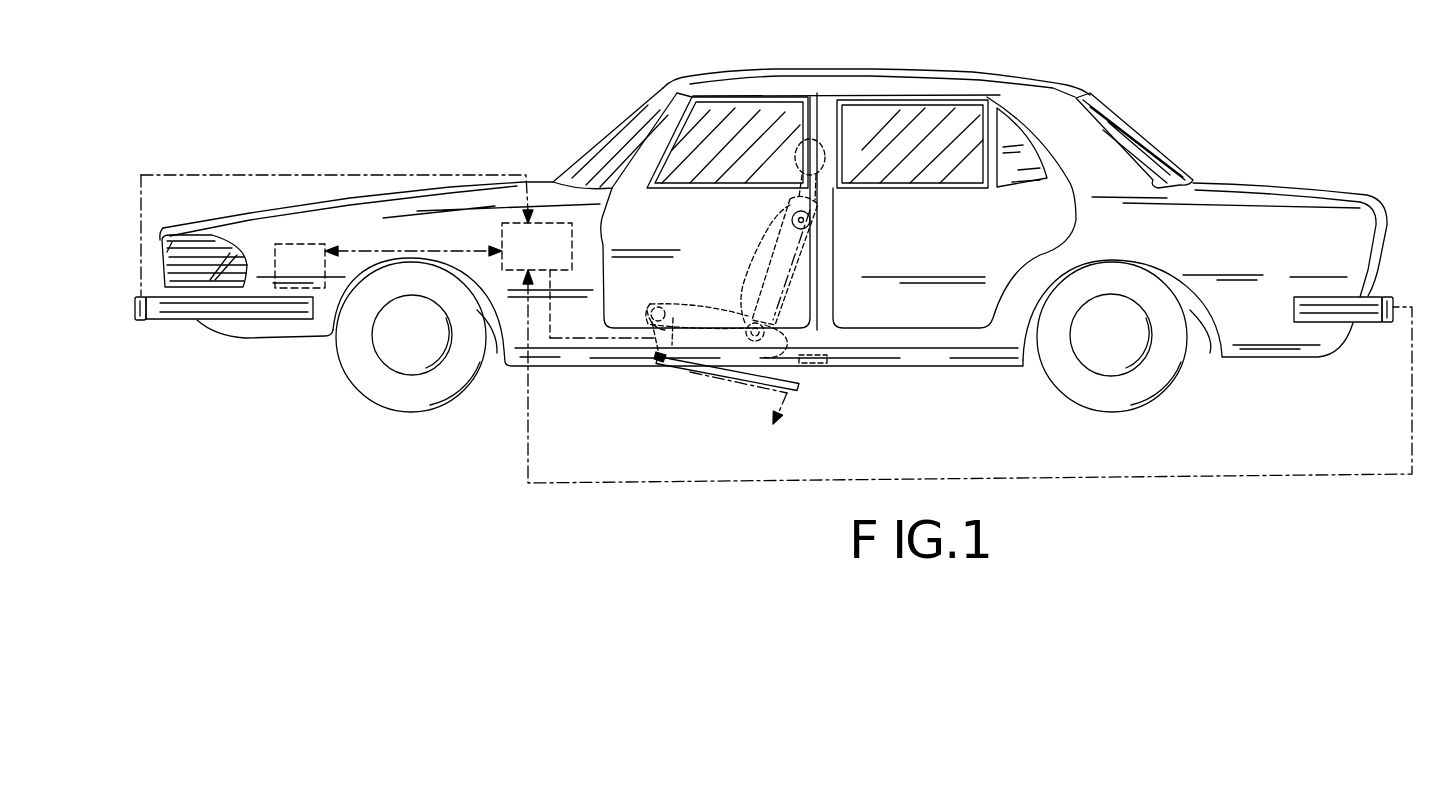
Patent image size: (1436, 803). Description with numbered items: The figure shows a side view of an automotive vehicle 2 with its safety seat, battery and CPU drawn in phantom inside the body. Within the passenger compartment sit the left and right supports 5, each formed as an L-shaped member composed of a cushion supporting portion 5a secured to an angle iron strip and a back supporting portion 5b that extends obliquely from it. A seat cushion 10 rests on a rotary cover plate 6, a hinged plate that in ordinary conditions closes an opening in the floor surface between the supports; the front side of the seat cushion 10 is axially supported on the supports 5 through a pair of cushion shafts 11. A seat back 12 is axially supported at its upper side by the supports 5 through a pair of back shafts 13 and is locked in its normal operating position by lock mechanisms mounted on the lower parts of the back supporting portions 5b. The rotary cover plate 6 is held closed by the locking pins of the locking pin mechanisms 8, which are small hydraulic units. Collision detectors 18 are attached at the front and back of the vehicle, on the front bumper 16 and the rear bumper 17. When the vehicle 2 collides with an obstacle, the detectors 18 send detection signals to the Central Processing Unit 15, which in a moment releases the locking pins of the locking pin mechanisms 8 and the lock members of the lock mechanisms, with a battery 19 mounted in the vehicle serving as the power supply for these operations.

The automotive vehicle 2 is at (1070, 84).
The supports 5 is at (755, 248).
The cushion supporting portion 5a is at (663, 305).
The back supporting portion 5b is at (773, 248).
The rotary cover plate 6 is at (740, 388).
The locking pin mechanisms 8 is at (820, 367).
The seat cushion 10 is at (726, 298).
The cushion shafts 11 is at (660, 353).
The seat back 12 is at (800, 282).
The back shafts 13 is at (810, 219).
The Central Processing Unit 15 is at (539, 222).
The front bumper 16 is at (178, 318).
The rear bumper 17 is at (1370, 304).
The collision detectors 18 is at (137, 298).
The battery 19 is at (310, 249).